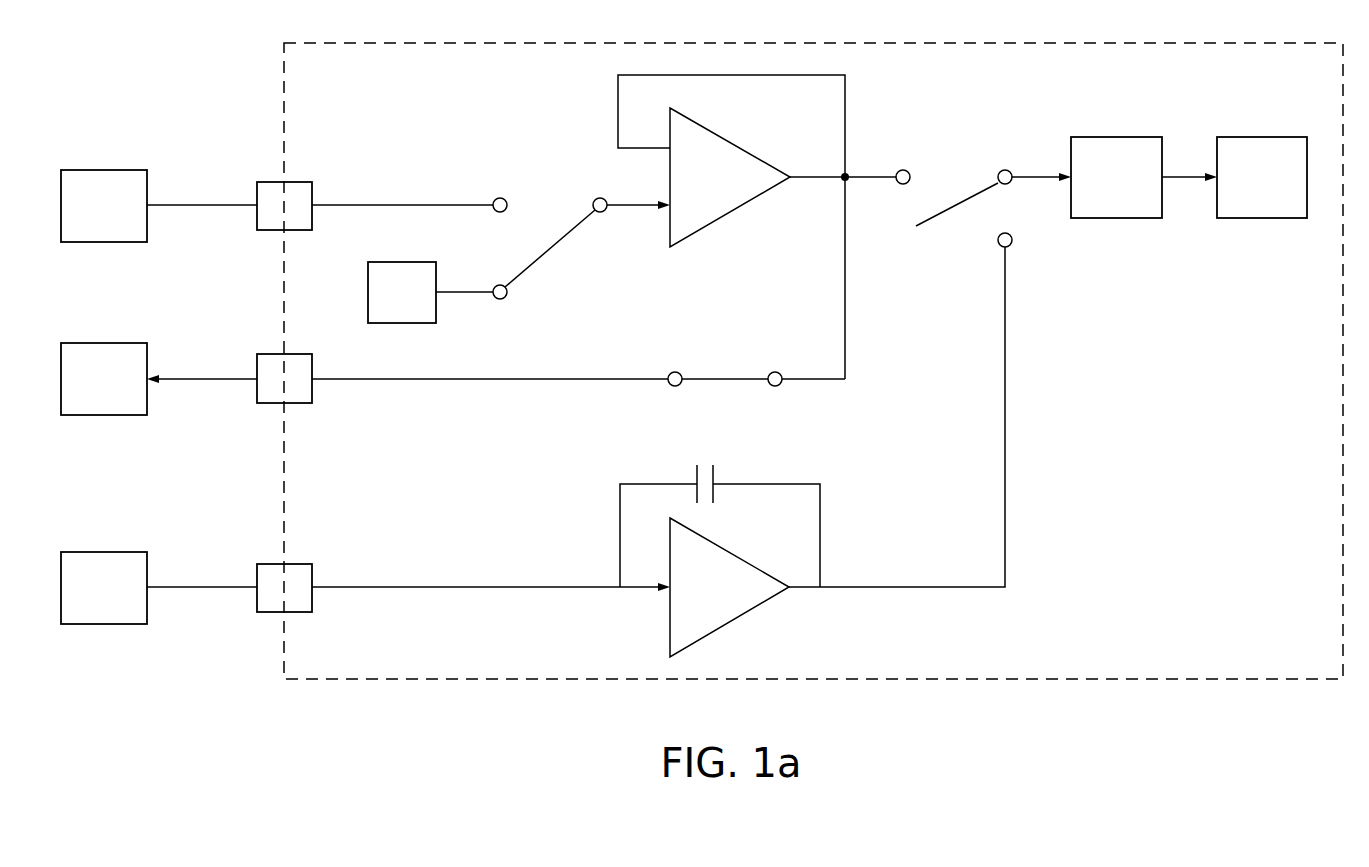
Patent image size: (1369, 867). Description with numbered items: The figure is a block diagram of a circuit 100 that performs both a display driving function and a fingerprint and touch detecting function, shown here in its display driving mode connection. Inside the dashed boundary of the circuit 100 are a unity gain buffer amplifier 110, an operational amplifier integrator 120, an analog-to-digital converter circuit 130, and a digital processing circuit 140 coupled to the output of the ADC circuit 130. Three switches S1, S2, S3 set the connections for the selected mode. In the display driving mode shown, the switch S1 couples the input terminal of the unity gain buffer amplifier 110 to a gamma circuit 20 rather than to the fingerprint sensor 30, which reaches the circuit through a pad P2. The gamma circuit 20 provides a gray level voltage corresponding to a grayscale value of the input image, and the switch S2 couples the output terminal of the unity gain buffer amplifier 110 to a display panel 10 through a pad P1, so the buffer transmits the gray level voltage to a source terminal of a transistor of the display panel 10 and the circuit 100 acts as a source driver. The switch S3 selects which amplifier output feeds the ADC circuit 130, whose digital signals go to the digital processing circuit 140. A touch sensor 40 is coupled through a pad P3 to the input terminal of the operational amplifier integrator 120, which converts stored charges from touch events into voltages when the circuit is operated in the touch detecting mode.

The circuit 100 is at (1268, 658).
The display panel 10 is at (88, 391).
The gamma circuit 20 is at (386, 306).
The fingerprint sensor 30 is at (88, 219).
The touch sensor 40 is at (88, 600).
The pad P1 is at (300, 394).
The pad P2 is at (300, 221).
The pad P3 is at (300, 603).
The unity gain buffer amplifier 110 is at (684, 192).
The operational amplifier integrator 120 is at (684, 604).
The analog-to-digital converter circuit 130 is at (1092, 192).
The digital processing circuit 140 is at (1238, 192).
The switch S1 is at (550, 248).
The switch S2 is at (725, 364).
The switch S3 is at (964, 208).